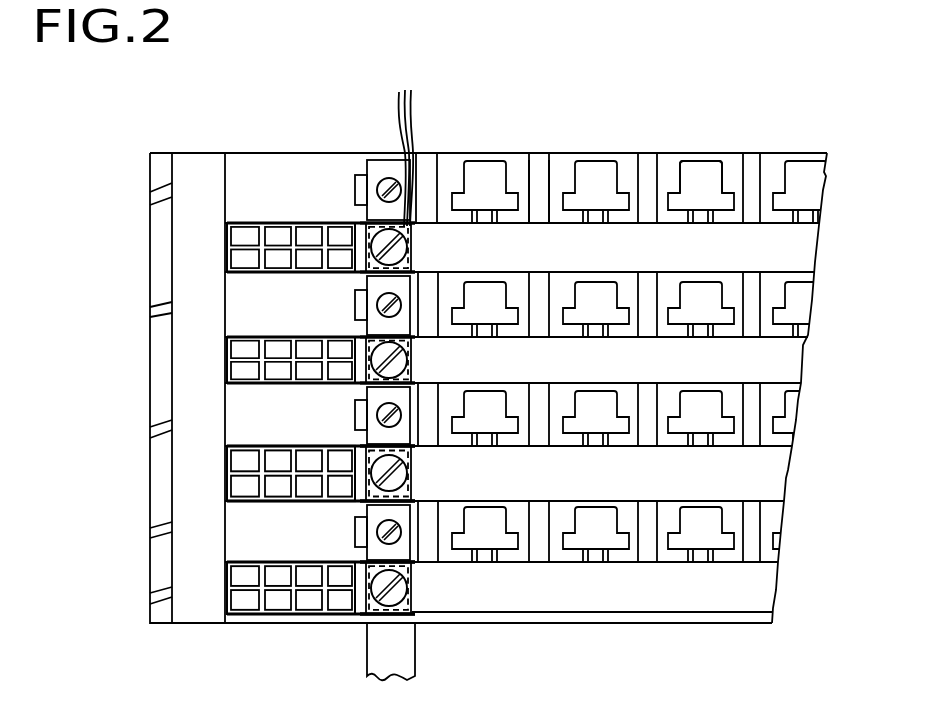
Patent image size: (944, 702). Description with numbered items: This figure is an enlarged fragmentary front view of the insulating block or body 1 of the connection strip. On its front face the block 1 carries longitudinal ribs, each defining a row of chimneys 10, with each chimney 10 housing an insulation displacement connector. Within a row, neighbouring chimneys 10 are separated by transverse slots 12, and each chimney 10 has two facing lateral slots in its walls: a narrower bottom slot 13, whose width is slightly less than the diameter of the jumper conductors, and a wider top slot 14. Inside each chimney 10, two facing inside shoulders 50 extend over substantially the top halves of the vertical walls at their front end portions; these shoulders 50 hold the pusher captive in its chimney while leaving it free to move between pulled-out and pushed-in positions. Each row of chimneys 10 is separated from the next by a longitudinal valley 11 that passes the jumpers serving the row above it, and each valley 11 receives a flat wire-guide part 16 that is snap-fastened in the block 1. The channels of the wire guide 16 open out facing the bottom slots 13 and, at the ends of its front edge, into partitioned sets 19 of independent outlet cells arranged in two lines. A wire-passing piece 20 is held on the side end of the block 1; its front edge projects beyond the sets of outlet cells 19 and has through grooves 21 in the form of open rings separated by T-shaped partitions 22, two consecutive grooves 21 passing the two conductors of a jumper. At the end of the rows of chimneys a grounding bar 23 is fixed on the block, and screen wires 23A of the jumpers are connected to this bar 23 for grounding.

The block or body 1 is at (712, 146).
The chimney 10 is at (665, 165).
The longitudinal valley 11 is at (557, 244).
The transverse slot 12 is at (536, 158).
The bottom lateral slot 13 is at (599, 334).
The top lateral slot 14 is at (597, 273).
The wire-guide part 16 is at (470, 159).
The set of outlet cells 19 is at (331, 233).
The wire-passing piece 20 is at (150, 230).
The through groove 21 is at (163, 422).
The T-shaped partition 22 is at (162, 463).
The grounding bar 23 is at (372, 289).
The wire 23A is at (410, 122).
The inside shoulder 50 is at (688, 186).